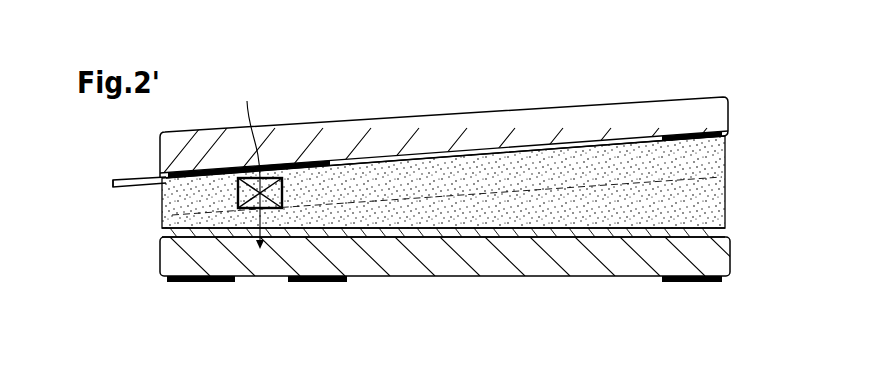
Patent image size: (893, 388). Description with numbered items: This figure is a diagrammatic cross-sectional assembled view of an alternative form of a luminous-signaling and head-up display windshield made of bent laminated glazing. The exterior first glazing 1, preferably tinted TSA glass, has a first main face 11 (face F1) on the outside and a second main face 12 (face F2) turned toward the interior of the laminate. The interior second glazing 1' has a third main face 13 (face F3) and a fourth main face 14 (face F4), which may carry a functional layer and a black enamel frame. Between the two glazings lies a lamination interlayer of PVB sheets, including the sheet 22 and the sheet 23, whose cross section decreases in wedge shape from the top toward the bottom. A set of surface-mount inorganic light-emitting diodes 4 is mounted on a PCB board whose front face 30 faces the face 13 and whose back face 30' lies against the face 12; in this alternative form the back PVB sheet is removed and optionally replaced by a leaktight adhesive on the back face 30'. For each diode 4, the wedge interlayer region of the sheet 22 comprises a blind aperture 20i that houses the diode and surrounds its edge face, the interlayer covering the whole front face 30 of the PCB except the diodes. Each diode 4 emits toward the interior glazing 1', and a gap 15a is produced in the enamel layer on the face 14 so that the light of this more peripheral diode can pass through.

The first glazing 1 is at (444, 115).
The second glazing 1' is at (445, 299).
The inorganic light-emitting diodes 4 is at (252, 164).
The first main face 11 is at (420, 113).
The second main face 12 is at (520, 147).
The third main face 13 is at (725, 232).
The fourth main face 14 is at (620, 277).
The gap 15a is at (260, 281).
The blind aperture 20i is at (240, 208).
The PVB sheet 22 is at (722, 160).
The PVB sheet 23 is at (723, 205).
The front face 30 is at (136, 224).
The back face 30' is at (111, 151).